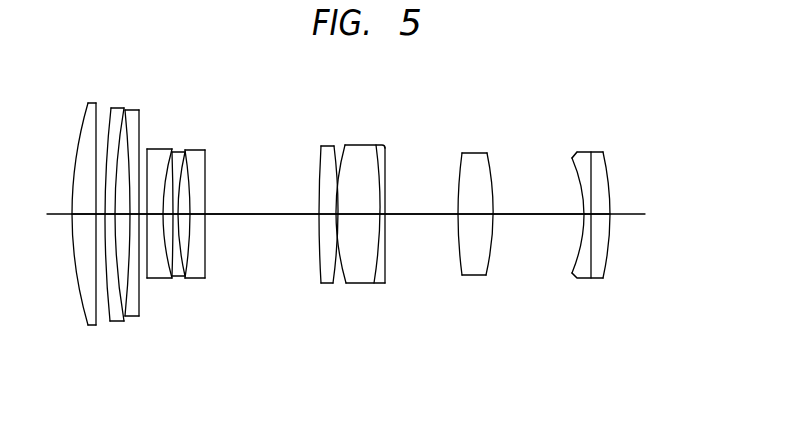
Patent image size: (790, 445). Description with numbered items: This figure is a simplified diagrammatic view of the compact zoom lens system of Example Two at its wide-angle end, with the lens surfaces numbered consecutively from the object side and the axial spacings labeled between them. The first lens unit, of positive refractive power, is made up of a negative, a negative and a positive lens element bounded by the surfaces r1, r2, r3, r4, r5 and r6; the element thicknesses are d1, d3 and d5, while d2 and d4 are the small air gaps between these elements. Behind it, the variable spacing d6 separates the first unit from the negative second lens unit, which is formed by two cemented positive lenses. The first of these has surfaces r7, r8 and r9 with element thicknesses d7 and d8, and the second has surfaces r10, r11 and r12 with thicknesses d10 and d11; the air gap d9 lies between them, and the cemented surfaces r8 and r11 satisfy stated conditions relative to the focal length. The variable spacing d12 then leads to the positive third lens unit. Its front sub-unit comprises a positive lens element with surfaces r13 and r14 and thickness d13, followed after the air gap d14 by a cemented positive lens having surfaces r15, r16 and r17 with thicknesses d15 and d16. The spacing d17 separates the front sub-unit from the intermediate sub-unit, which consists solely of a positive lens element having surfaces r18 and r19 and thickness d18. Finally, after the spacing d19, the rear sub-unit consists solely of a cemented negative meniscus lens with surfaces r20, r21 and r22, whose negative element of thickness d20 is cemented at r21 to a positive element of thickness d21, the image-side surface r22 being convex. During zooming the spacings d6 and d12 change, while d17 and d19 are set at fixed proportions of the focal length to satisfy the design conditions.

The radius of curvature of the first surface r1 is at (88, 103).
The radius of curvature of the second surface r2 is at (96, 106).
The radius of curvature of the third surface r3 is at (111, 108).
The radius of curvature of the fourth surface r4 is at (120, 126).
The radius of curvature of the fifth surface r5 is at (127, 112).
The radius of curvature of the sixth surface r6 is at (139, 114).
The radius of curvature of the seventh surface r7 is at (148, 149).
The radius of curvature of the eighth surface r8 is at (170, 152).
The radius of curvature of the ninth surface r9 is at (174, 153).
The radius of curvature of the tenth surface r10 is at (186, 153).
The radius of curvature of the eleventh surface r11 is at (194, 151).
The radius of curvature of the twelfth surface r12 is at (206, 153).
The radius of curvature of the thirteenth surface r13 is at (321, 148).
The radius of curvature of the fourteenth surface r14 is at (334, 150).
The radius of curvature of the fifteenth surface r15 is at (346, 147).
The radius of curvature of the sixteenth surface r16 is at (376, 150).
The radius of curvature of the seventeenth surface r17 is at (386, 150).
The radius of curvature of the eighteenth surface r18 is at (462, 157).
The radius of curvature of the nineteenth surface r19 is at (488, 157).
The radius of curvature of the twentieth surface r20 is at (573, 162).
The radius of curvature of the twenty-first surface r21 is at (591, 154).
The radius of curvature of the twenty-second surface r22 is at (605, 156).
The distance between the first and second surfaces d1 is at (84, 228).
The distance between the second and third surfaces d2 is at (100, 228).
The distance between the third and fourth surfaces d3 is at (110, 228).
The distance between the fourth and fifth surfaces d4 is at (122, 228).
The distance between the fifth and sixth surfaces d5 is at (134, 228).
The distance between the sixth and seventh surfaces d6 is at (143, 228).
The distance between the seventh and eighth surfaces d7 is at (155, 228).
The distance between the eighth and ninth surfaces d8 is at (168, 228).
The distance between the ninth and tenth surfaces d9 is at (175, 228).
The distance between the tenth and eleventh surfaces d10 is at (184, 228).
The distance between the eleventh and twelfth surfaces d11 is at (197, 228).
The distance between the twelfth and thirteenth surfaces d12 is at (258, 218).
The distance between the thirteenth and fourteenth surfaces d13 is at (328, 220).
The distance between the fourteenth and fifteenth surfaces d14 is at (337, 220).
The distance between the fifteenth and sixteenth surfaces d15 is at (358, 222).
The distance between the sixteenth and seventeenth surfaces d16 is at (383, 222).
The distance between the seventeenth and eighteenth surfaces d17 is at (420, 218).
The distance between the eighteenth and nineteenth surfaces d18 is at (475, 222).
The distance between the nineteenth and twentieth surfaces d19 is at (536, 220).
The distance between the twentieth and twenty-first surfaces d20 is at (588, 222).
The distance between the twenty-first and twenty-second surfaces d21 is at (602, 222).